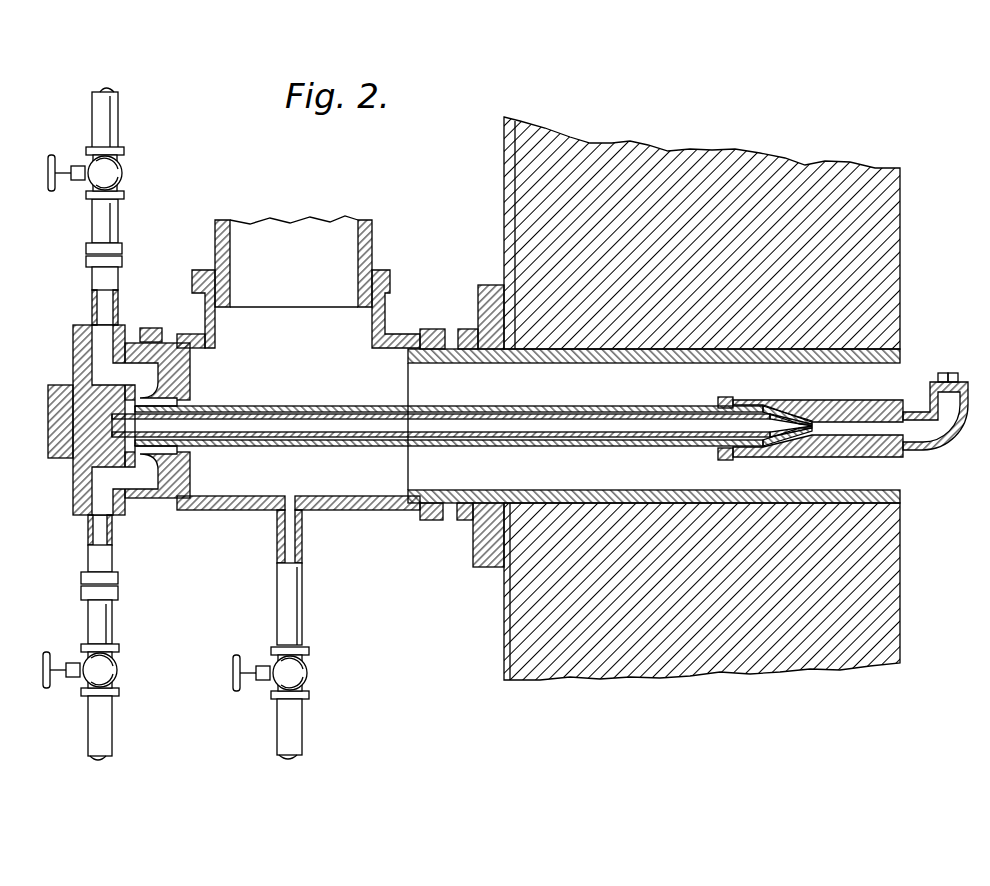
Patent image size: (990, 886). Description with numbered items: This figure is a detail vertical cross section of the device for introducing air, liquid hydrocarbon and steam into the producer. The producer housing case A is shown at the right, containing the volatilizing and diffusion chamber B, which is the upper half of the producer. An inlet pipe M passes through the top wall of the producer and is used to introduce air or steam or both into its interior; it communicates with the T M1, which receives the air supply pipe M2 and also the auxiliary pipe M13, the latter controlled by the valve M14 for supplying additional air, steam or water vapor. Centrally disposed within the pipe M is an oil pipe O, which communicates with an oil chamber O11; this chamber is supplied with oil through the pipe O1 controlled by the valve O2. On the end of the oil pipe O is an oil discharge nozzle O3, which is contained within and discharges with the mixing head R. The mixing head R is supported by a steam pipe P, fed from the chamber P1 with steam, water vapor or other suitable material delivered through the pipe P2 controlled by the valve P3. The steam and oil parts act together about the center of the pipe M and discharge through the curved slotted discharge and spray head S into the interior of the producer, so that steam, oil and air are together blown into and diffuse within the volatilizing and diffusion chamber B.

The producer housing case A is at (502, 630).
The volatilizing and diffusion chamber B is at (900, 607).
The inlet pipe M is at (905, 374).
The T M1 is at (393, 333).
The air supply pipe M2 is at (345, 243).
The auxiliary pipe M13 is at (300, 601).
The valve M14 is at (310, 672).
The oil pipe O is at (540, 430).
The pipe O1 is at (107, 297).
The valve O2 is at (112, 172).
The oil discharge nozzle O3 is at (757, 447).
The oil chamber O11 is at (98, 380).
The steam pipe P is at (347, 440).
The chamber P1 is at (100, 470).
The pipe P2 is at (110, 618).
The valve P3 is at (118, 672).
The mixing head R is at (845, 428).
The curved slotted discharge and spray head S is at (935, 437).